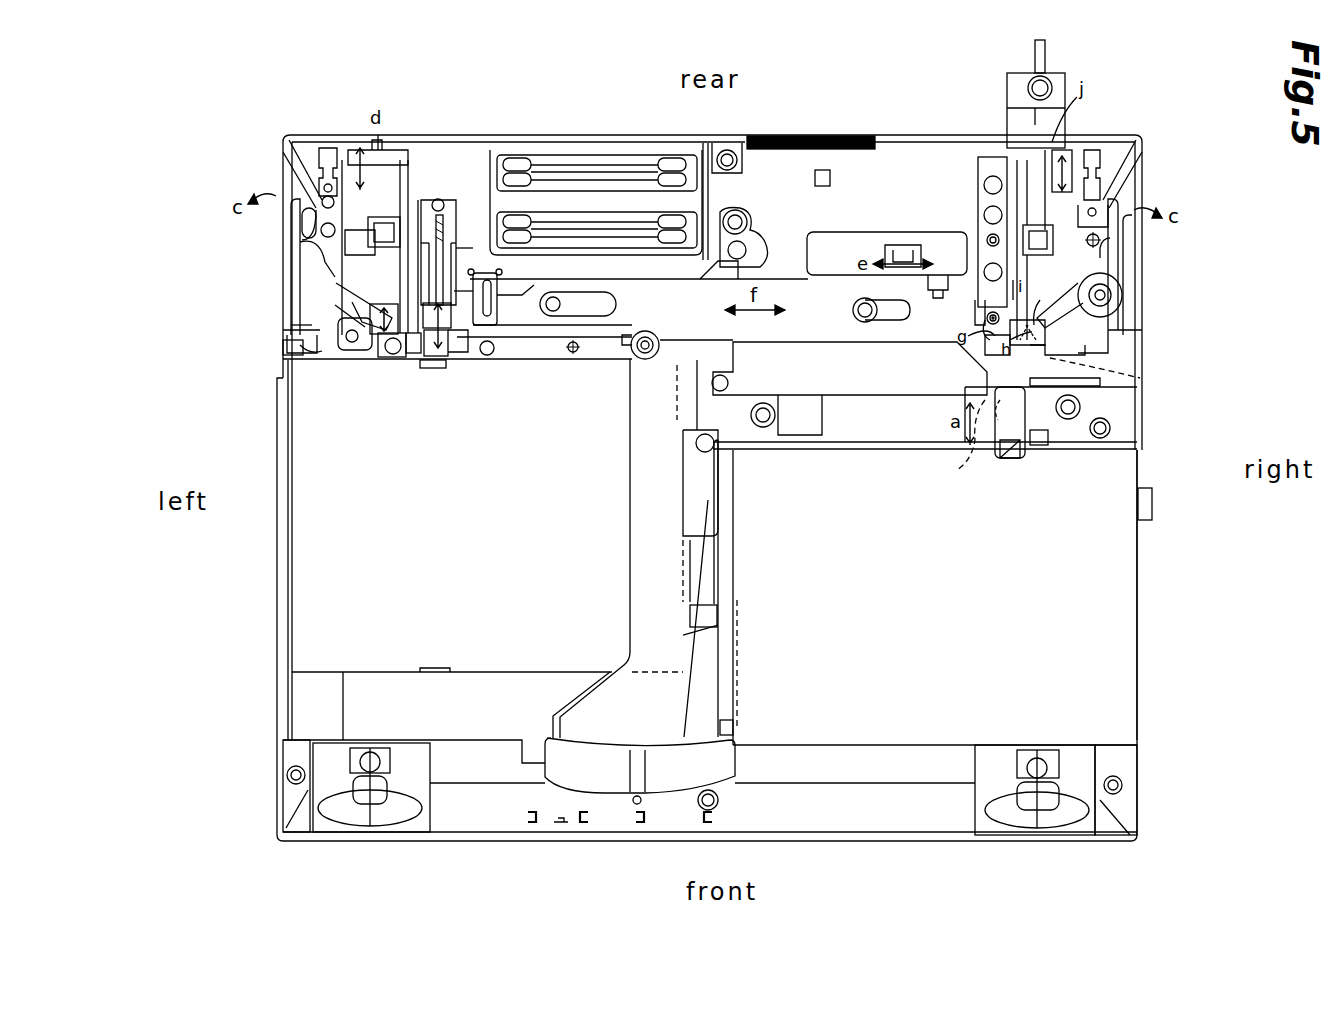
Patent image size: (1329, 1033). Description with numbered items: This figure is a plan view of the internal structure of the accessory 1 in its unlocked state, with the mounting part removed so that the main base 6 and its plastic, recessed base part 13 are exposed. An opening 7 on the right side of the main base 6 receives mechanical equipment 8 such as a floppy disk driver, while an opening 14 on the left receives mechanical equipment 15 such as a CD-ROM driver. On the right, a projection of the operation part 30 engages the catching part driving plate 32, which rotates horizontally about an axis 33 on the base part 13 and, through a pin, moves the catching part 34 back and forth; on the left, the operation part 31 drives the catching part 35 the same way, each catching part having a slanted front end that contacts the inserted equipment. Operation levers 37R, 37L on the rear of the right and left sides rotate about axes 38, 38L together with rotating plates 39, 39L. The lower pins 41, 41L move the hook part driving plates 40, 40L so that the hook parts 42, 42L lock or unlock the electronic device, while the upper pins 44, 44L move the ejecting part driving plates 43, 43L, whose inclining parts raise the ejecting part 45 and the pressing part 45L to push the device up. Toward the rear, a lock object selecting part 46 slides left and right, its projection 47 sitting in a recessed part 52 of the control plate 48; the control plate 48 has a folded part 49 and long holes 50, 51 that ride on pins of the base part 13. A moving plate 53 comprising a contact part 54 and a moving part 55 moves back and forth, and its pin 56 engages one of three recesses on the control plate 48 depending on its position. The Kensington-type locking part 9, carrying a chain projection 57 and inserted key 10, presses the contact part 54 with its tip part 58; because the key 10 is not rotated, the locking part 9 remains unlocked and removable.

The accessory 1 is at (1150, 679).
The main base 6 is at (1146, 465).
The opening 7 is at (1138, 648).
The mechanical equipment 8 is at (1116, 592).
The locking part 9 is at (1015, 115).
The key 10 is at (1037, 50).
The base part 13 is at (1142, 820).
The opening 14 is at (283, 485).
The mechanical equipment 15 is at (313, 566).
The operation part 30 is at (968, 482).
The operation part 31 is at (459, 357).
The catching part driving plate 32 is at (1038, 444).
The axis 33 is at (1140, 437).
The catching part 34 is at (1004, 455).
The catching part 35 is at (436, 363).
The operation lever 37L is at (292, 302).
The operation lever 37R is at (1131, 271).
The axis 38 is at (1109, 295).
The axis 38L is at (323, 340).
The rotating plate 39 is at (1116, 292).
The rotating plate 39L is at (311, 269).
The hook part driving plate 40 is at (1015, 350).
The hook part driving plate 40L is at (372, 360).
The lower pin 41 is at (1116, 361).
The lower pin 41L is at (333, 355).
The hook part 42 is at (1105, 178).
The hook part 42L is at (328, 178).
The ejecting part driving plate 43 is at (1087, 276).
The ejecting part driving plate 43L is at (334, 300).
The upper pin 44 is at (1106, 383).
The upper pin 44L is at (396, 360).
The ejecting part 45 is at (1030, 235).
The pressing part 45L is at (386, 218).
The lock object selecting part 46 is at (908, 240).
The projection 47 is at (937, 275).
The control plate 48 is at (812, 342).
The folded part 49 is at (1110, 412).
The long hole 50 is at (616, 300).
The long hole 51 is at (890, 325).
The recessed part 52 is at (926, 292).
The moving plate 53 is at (982, 233).
The contact part 54 is at (1065, 150).
The moving part 55 is at (983, 307).
The pin 56 is at (980, 353).
The projection 57 is at (1050, 88).
The tip part 58 is at (1007, 145).